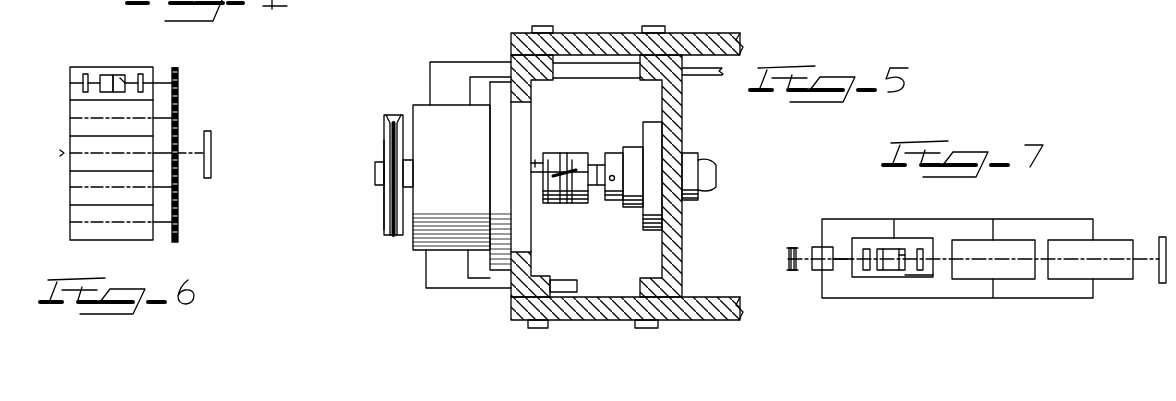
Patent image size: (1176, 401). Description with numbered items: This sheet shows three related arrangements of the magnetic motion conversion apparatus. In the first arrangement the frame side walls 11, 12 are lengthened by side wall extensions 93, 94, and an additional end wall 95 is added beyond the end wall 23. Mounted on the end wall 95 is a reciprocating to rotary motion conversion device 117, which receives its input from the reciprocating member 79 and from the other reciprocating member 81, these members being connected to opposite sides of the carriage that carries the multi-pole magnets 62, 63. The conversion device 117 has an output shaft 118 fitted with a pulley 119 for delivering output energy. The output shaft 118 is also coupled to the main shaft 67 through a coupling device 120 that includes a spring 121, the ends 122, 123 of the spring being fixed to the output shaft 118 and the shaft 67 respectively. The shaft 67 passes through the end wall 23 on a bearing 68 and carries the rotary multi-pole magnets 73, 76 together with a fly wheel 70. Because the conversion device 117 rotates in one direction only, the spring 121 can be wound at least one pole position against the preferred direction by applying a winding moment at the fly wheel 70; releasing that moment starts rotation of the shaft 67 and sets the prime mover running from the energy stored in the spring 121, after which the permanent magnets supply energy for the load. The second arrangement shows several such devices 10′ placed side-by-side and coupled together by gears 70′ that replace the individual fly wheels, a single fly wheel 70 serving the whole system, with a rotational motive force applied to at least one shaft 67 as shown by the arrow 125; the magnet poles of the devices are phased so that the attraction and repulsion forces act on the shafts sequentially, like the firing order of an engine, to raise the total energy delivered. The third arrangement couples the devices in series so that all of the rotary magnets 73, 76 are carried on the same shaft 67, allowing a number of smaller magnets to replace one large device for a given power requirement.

In FIG. 6, the multi-pole magnet 73 is at (86, 74).
In FIG. 7, the multi-pole magnet 73 is at (866, 270).
In FIG. 6, the multi-pole magnet 62 is at (104, 75).
In FIG. 7, the multi-pole magnet 62 is at (881, 270).
In FIG. 6, the device 10′ is at (118, 75).
In FIG. 6, the multi-pole magnet 63 is at (124, 80).
In FIG. 7, the multi-pole magnet 63 is at (902, 270).
In FIG. 6, the multi-pole magnet 76 is at (141, 77).
In FIG. 7, the multi-pole magnet 76 is at (920, 250).
In FIG. 6, the shaft 67 is at (72, 83).
In FIG. 5, the shaft 67 is at (714, 162).
In FIG. 7, the shaft 67 is at (843, 260).
In FIG. 6, the gear 70′ is at (183, 68).
In FIG. 6, the arrow 125 is at (60, 153).
In FIG. 6, the fly wheel 70 is at (208, 131).
In FIG. 7, the fly wheel 70 is at (1162, 237).
In FIG. 5, the conversion device 117 is at (430, 117).
In FIG. 7, the conversion device 117 is at (813, 250).
In FIG. 5, the output shaft 118 is at (375, 173).
In FIG. 5, the pulley 119 is at (384, 200).
In FIG. 5, the side wall extension 93 is at (606, 42).
In FIG. 5, the side wall 11 is at (722, 38).
In FIG. 5, the reciprocating member 79 is at (612, 70).
In FIG. 7, the reciprocating member 79 is at (893, 228).
In FIG. 5, the bearing 68 is at (647, 130).
In FIG. 5, the coupling device 120 is at (587, 145).
In FIG. 5, the end of spring 123 is at (563, 178).
In FIG. 5, the end of spring 122 is at (549, 205).
In FIG. 5, the spring 121 is at (576, 205).
In FIG. 5, the end wall 23 is at (673, 246).
In FIG. 5, the side wall extension 94 is at (606, 300).
In FIG. 5, the side wall 12 is at (700, 308).
In FIG. 5, the end wall 95 is at (512, 290).
In FIG. 7, the reciprocating member 81 is at (992, 290).